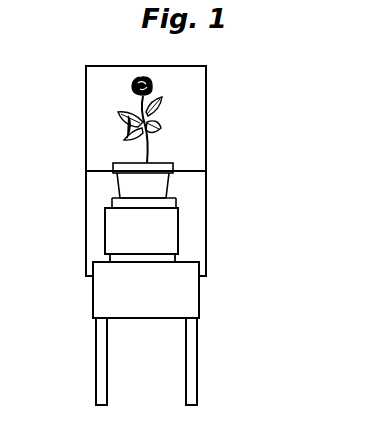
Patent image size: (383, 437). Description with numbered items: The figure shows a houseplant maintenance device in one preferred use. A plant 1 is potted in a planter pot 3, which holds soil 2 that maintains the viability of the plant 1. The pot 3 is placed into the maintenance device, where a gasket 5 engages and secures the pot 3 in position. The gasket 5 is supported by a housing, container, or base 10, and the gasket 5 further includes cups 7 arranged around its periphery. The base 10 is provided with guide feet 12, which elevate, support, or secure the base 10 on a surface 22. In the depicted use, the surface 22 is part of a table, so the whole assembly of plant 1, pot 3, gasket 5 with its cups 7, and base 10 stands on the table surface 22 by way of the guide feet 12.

The plant 1 is at (162, 112).
The soil 2 is at (157, 162).
The planter pot 3 is at (169, 185).
The gasket 5 is at (178, 200).
The cups 7 is at (106, 205).
The base 10 is at (87, 238).
The guide feet 12 is at (178, 258).
The surface 22 is at (145, 264).